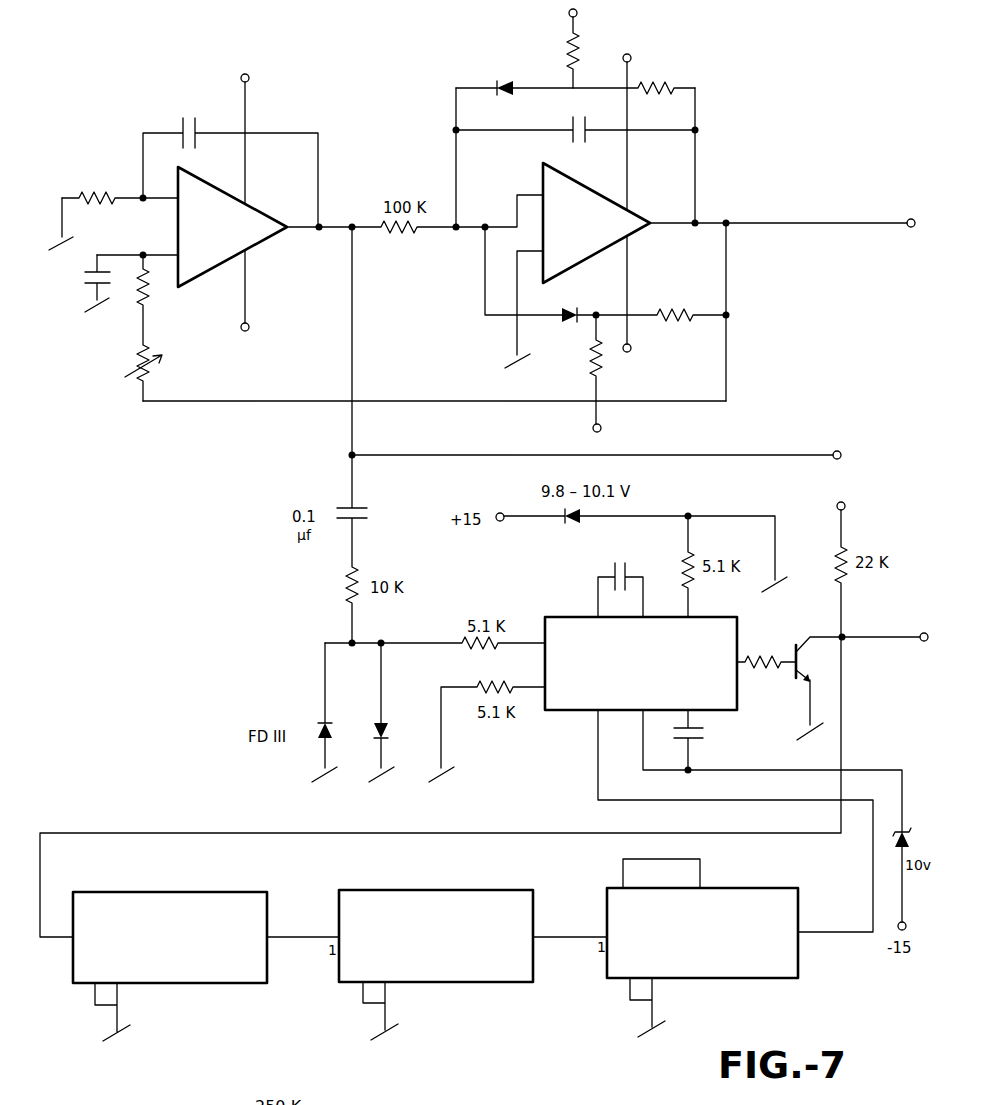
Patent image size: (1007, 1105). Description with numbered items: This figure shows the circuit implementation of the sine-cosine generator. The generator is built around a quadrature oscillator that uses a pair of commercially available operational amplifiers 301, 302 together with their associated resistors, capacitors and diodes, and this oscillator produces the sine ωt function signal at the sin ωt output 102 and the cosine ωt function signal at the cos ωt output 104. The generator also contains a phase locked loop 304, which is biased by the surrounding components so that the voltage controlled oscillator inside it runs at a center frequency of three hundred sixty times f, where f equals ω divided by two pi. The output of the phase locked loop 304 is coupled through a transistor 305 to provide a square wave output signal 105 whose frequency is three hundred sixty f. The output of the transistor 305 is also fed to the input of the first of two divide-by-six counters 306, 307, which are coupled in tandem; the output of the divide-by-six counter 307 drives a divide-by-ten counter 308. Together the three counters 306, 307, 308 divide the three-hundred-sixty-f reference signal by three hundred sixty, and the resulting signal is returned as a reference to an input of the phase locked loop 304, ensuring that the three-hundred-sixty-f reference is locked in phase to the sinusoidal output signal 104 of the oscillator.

The sin ωt output 102 is at (873, 222).
The cos ωt output 104 is at (813, 455).
The square wave output signal 105 is at (910, 640).
The operational amplifier 301 is at (235, 210).
The operational amplifier 302 is at (612, 210).
The phase locked loop 304 is at (721, 628).
The transistor 305 is at (805, 667).
The divide-by-6 counter 306 is at (212, 902).
The divide-by-6 counter 307 is at (474, 900).
The divide-by-10 counter 308 is at (750, 895).